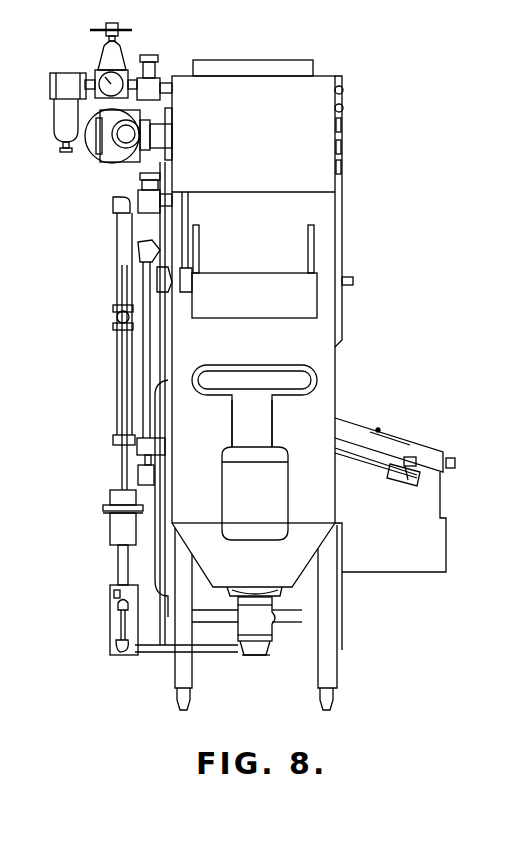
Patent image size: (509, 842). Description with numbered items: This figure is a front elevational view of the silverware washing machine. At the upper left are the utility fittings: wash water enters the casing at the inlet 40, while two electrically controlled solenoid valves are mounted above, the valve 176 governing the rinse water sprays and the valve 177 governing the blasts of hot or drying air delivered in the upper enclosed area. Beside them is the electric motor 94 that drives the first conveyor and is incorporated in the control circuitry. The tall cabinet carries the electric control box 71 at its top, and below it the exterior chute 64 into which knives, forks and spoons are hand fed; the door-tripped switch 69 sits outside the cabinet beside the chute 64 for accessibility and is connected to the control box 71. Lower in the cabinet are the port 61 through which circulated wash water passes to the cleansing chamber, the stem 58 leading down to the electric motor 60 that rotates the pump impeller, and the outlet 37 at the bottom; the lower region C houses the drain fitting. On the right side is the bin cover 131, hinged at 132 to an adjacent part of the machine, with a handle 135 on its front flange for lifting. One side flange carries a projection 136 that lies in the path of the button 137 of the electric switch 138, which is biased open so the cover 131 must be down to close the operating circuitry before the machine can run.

The outlet valve 37 is at (262, 646).
The wash water inlet 40 is at (140, 247).
The stem 58 is at (248, 419).
The electric motor 60 is at (240, 514).
The port 61 is at (258, 386).
The exterior chute 64 is at (243, 309).
The switch 69 is at (186, 293).
The electric control box 71 is at (244, 136).
The electric motor 94 is at (106, 162).
The cover 131 is at (410, 446).
The hinge 132 is at (378, 430).
The handle 135 is at (451, 468).
The projection 136 is at (414, 460).
The button 137 is at (408, 474).
The electric switch 138 is at (400, 480).
The electrically controlled valve 176 is at (150, 210).
The electrically controlled valve 177 is at (150, 87).
The control panel C is at (410, 573).